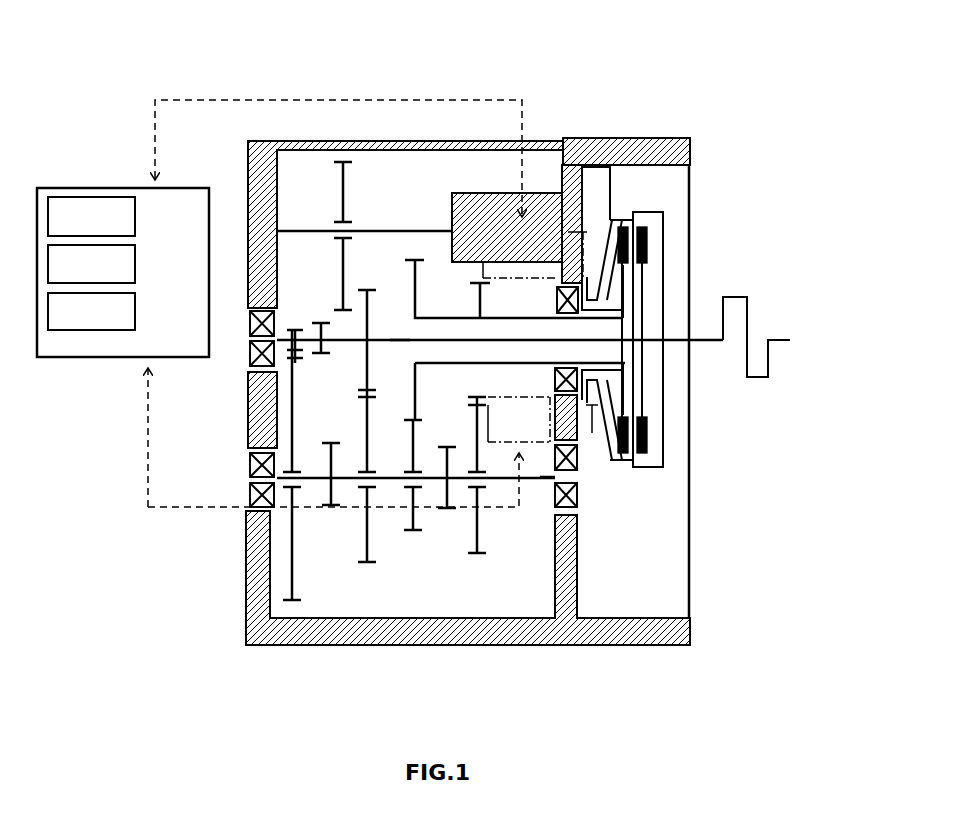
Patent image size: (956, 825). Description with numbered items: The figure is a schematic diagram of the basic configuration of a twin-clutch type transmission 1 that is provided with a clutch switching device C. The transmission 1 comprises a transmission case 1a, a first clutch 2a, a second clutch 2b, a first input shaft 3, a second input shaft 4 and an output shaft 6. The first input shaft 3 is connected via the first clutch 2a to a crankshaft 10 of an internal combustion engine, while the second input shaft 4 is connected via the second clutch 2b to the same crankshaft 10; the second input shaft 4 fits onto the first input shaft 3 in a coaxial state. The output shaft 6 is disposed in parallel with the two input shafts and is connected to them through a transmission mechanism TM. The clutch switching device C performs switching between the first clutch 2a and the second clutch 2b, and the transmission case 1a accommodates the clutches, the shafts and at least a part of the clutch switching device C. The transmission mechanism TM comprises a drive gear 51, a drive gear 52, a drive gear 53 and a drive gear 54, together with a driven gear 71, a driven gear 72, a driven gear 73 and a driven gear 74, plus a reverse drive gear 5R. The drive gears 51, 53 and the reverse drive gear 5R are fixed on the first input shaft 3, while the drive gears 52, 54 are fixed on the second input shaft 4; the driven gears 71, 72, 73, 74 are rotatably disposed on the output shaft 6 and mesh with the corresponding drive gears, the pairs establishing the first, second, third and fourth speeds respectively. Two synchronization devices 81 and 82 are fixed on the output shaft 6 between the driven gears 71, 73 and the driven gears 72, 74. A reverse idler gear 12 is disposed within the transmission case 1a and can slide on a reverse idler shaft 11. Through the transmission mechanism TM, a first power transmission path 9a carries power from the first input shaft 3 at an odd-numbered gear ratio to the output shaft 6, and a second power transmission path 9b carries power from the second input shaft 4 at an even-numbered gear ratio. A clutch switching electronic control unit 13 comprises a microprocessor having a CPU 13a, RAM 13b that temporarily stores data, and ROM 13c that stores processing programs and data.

The twin-clutch type transmission 1 is at (767, 104).
The transmission case 1a is at (412, 140).
The transmission mechanism TM is at (303, 193).
The reverse idler gear 12 is at (343, 193).
The drive gear 54 is at (455, 305).
The first power transmission path 9a is at (486, 304).
The drive gear 52 is at (537, 192).
The clutch switching device C is at (599, 247).
The second clutch 2b is at (623, 222).
The first clutch 2a is at (649, 235).
The crankshaft 10 is at (747, 303).
The first input shaft 3 is at (603, 341).
The drive gear 51 is at (295, 323).
The reverse idler shaft 11 is at (385, 232).
The reverse drive gear 5R is at (318, 323).
The drive gear 53 is at (380, 318).
The clutch switching electronic control unit 13 is at (68, 358).
The CPU 13a is at (137, 213).
The RAM 13b is at (137, 262).
The ROM 13c is at (137, 309).
The second power transmission path 9b is at (398, 346).
The synchronization device 82 is at (329, 442).
The second input shaft 4 is at (577, 474).
The output shaft 6 is at (540, 478).
The driven gear 71 is at (292, 550).
The driven gear 73 is at (367, 546).
The driven gear 74 is at (413, 533).
The driven gear 72 is at (486, 533).
The synchronization device 81 is at (445, 513).